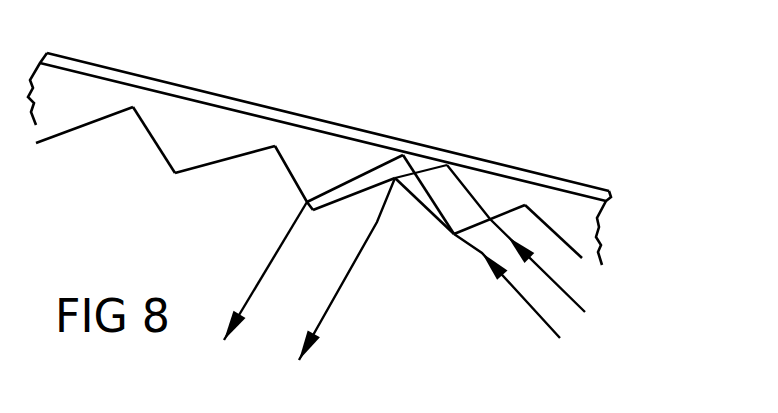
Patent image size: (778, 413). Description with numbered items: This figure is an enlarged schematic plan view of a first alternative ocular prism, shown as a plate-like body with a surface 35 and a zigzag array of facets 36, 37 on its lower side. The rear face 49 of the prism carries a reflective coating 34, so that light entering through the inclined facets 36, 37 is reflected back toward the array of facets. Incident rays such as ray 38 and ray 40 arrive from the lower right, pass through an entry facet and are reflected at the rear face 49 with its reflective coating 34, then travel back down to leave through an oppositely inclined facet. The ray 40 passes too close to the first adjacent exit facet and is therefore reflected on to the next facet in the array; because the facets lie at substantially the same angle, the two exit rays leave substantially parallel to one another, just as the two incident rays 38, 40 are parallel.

The reflective coating 34 is at (352, 133).
The upper surface of plate 35 is at (198, 128).
The first facet surfaces 36 is at (218, 162).
The second facet surfaces 37 is at (147, 132).
The incident light ray 38 is at (568, 293).
The ray 40 is at (533, 311).
The rear face 49 is at (427, 158).